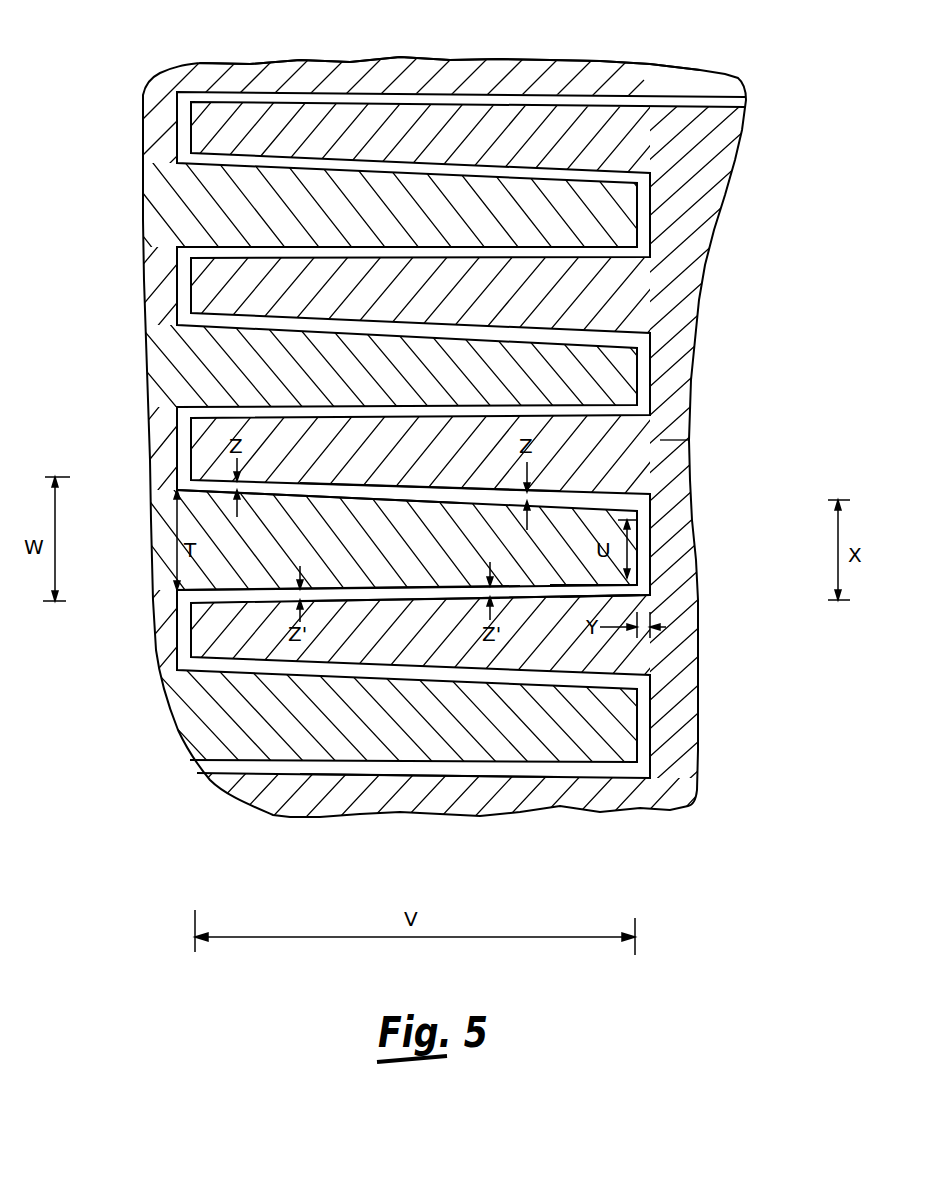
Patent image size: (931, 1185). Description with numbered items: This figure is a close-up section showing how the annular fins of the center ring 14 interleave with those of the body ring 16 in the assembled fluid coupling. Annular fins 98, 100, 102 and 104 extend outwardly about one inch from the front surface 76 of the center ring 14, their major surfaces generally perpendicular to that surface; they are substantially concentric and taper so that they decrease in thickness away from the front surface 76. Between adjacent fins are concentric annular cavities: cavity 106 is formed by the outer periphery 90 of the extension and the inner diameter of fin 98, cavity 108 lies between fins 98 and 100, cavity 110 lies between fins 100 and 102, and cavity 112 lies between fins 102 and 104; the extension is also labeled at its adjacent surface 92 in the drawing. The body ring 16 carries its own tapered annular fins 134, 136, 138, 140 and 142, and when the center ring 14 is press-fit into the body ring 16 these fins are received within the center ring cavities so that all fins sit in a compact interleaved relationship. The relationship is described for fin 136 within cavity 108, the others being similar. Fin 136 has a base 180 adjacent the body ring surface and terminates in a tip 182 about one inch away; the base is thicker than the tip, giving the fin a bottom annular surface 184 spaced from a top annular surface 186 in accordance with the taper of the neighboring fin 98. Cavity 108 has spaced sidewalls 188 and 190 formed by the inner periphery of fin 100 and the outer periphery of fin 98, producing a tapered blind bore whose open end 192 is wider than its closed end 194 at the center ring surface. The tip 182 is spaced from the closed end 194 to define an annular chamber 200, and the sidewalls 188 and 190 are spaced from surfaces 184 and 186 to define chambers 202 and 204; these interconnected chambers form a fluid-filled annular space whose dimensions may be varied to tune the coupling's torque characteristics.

The center ring 14 is at (672, 447).
The body ring 16 is at (168, 340).
The front surface 76 is at (653, 540).
The outer periphery 90 is at (422, 775).
The bottom surface 92 is at (505, 797).
The annular fin 98 is at (392, 649).
The annular fin 100 is at (430, 461).
The annular fin 102 is at (435, 300).
The annular fin 104 is at (452, 148).
The annular cavity 106 is at (645, 733).
The annular cavity 108 is at (629, 498).
The annular cavity 110 is at (643, 380).
The annular cavity 112 is at (634, 177).
The annular fin 134 is at (412, 735).
The annular fin 136 is at (447, 562).
The annular fin 138 is at (435, 379).
The annular fin 140 is at (435, 224).
The annular fin 142 is at (476, 70).
The base 180 is at (177, 589).
The tip 182 is at (645, 587).
The bottom annular surface 184 is at (540, 589).
The top annular surface 186 is at (363, 500).
The sidewall 188 is at (463, 489).
The sidewall 190 is at (557, 600).
The open end 192 is at (191, 481).
The closed end 194 is at (654, 594).
The annular chamber 200 is at (641, 521).
The annular chamber 202 is at (635, 458).
The annular chamber 204 is at (440, 601).